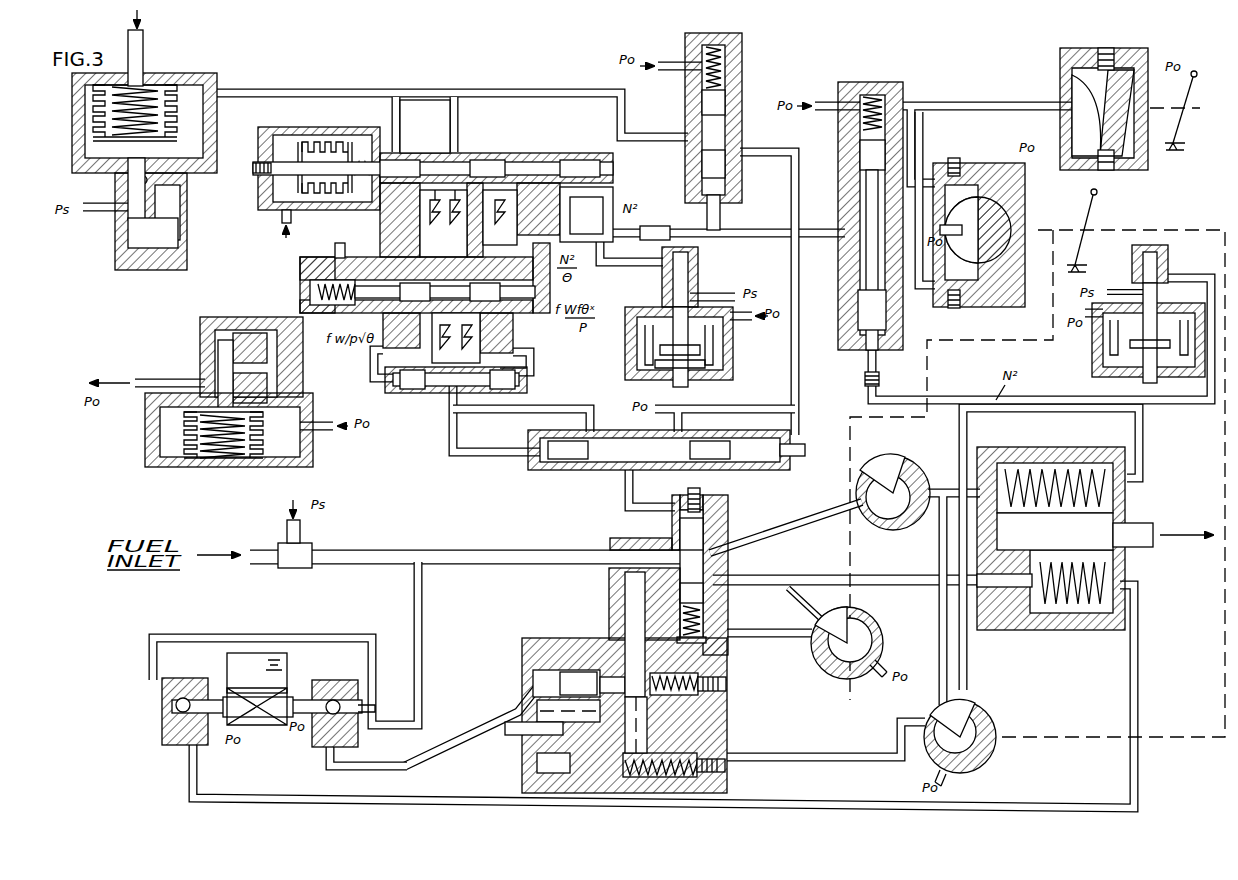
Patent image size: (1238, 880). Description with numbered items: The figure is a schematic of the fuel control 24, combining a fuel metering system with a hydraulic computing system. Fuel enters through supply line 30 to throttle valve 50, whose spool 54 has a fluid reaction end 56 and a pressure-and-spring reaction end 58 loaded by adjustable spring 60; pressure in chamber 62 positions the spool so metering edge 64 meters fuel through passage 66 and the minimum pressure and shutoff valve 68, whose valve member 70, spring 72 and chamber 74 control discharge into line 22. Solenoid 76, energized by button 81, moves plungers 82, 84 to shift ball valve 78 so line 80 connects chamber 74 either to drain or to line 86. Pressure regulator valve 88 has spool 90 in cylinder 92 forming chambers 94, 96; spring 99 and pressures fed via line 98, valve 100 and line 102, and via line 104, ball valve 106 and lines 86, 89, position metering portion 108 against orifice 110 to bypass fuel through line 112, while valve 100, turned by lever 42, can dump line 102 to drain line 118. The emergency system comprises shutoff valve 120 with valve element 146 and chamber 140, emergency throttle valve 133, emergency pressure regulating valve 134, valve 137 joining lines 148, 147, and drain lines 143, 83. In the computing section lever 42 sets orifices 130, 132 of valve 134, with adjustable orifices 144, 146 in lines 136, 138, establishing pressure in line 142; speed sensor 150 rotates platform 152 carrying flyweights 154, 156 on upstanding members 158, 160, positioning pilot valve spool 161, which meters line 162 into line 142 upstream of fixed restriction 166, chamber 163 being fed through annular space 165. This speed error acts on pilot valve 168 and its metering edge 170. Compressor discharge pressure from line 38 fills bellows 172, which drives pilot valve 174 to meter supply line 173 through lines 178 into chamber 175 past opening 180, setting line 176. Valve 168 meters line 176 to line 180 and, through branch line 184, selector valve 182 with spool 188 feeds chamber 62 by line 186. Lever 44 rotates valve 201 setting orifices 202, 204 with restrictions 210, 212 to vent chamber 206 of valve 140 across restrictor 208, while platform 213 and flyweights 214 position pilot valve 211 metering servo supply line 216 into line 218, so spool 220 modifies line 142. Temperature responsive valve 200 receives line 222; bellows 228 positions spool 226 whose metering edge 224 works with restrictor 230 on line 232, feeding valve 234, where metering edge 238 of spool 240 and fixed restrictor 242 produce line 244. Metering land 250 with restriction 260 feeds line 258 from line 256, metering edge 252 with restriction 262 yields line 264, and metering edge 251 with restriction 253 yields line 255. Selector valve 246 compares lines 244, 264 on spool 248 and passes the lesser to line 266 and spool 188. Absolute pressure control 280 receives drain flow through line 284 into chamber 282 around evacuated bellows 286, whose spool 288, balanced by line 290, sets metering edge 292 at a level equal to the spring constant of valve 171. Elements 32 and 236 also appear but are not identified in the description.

The line 22 is at (1163, 521).
The fuel control 24 is at (825, 86).
The supply line 30 is at (455, 548).
The bypass passage 32 is at (515, 745).
The line 38 is at (145, 58).
The lever 42 is at (1093, 210).
The lever 44 is at (1194, 110).
The throttle valve 50 is at (730, 523).
The spool 54 is at (730, 505).
The fluid reaction end 56 is at (660, 522).
The pressure and spring reaction end 58 is at (705, 598).
The adjustable spring 60 is at (705, 620).
The chamber 62 is at (702, 495).
The metering edge 64 is at (735, 555).
The passage 66 is at (798, 575).
The minimum pressure and shutoff valve 68 is at (1040, 650).
The valve member 70 is at (1015, 632).
The spring 72 is at (1128, 563).
The chamber 74 is at (1095, 632).
The solenoid 76 is at (292, 690).
The ball valve 78 is at (185, 698).
The line 80 is at (230, 795).
The button 81 is at (250, 650).
The plunger 82 is at (215, 695).
The line 83 is at (325, 715).
The plunger 84 is at (330, 700).
The line 86 is at (320, 636).
The pressure regulator valve 88 is at (700, 670).
The line 89 is at (375, 707).
The spool 90 is at (650, 727).
The cylinder 92 is at (793, 697).
The chamber 94 is at (700, 680).
The chamber 96 is at (580, 660).
The line 98 is at (810, 609).
The adjustable spring 99 is at (728, 690).
The valve 100 is at (865, 620).
The line 102 is at (769, 625).
The line 104 is at (460, 735).
The ball valve 106 is at (368, 751).
The metering portion 108 is at (623, 640).
The orifice 110 is at (650, 745).
The line 112 is at (609, 600).
The line 118 is at (880, 668).
The shutoff valve 120 is at (1065, 462).
The orifice 130 is at (1000, 180).
The orifice 132 is at (956, 248).
The emergency throttle valve 133 is at (915, 470).
The valve 134 is at (1005, 218).
The line 136 is at (945, 313).
The valve 137 is at (990, 716).
The line 138 is at (920, 170).
The valve 140 is at (910, 90).
The line 142 is at (760, 214).
The line 143 is at (1142, 472).
The adjustable orifice 144 is at (962, 300).
The adjustable orifice 146 is at (955, 165).
The line 147 is at (938, 550).
The line 148 is at (826, 739).
The speed sensor 150 is at (735, 333).
The platform 152 is at (715, 380).
The flyweight 154 is at (712, 345).
The flyweight 156 is at (640, 362).
The upstanding member 158 is at (600, 390).
The pilot valve 160 is at (716, 361).
The spool 161 is at (597, 333).
The line 162 is at (700, 275).
The chamber 163 is at (700, 258).
The annular space 165 is at (700, 268).
The fixed restriction 166 is at (664, 221).
The pilot valve 168 is at (727, 178).
The metering edge 170 is at (740, 155).
The valve 171 is at (185, 78).
The bellows 172 is at (180, 100).
The pressure supply line 173 is at (128, 212).
The pilot valve 174 is at (128, 240).
The chamber 175 is at (207, 120).
The line 176 is at (300, 90).
The line 178 is at (180, 206).
The opening 180 is at (800, 364).
The selector valve 182 is at (770, 460).
The branch line 184 is at (790, 403).
The line 186 is at (626, 496).
The spool 188 is at (592, 470).
The temperature responsive valve 200 is at (540, 150).
The valve 201 is at (1140, 130).
The orifice 202 is at (1105, 122).
The orifice 204 is at (1085, 75).
The chamber 206 is at (895, 338).
The restrictor 208 is at (890, 380).
The adjustable restriction 210 is at (1116, 168).
The pilot valve 211 is at (1152, 302).
The adjustable restriction 212 is at (1116, 52).
The platform 213 is at (1158, 378).
The flyweights 214 is at (1185, 320).
The servo supply line 216 is at (1115, 290).
The line 218 is at (1178, 407).
The spool 220 is at (862, 268).
The line 222 is at (425, 126).
The metering edge 224 is at (305, 224).
The spool 226 is at (335, 167).
The bellows 228 is at (315, 135).
The restrictor 230 is at (417, 276).
The line 232 is at (348, 258).
The valve 234 is at (300, 262).
The port 236 is at (326, 247).
The metering edge 238 is at (443, 262).
The spool 240 is at (593, 293).
The fixed restrictor 242 is at (456, 338).
The line 244 is at (373, 338).
The selector valve 246 is at (390, 385).
The spool 248 is at (440, 392).
The metering land 250 is at (472, 150).
The metering edge 251 is at (560, 156).
The metering land 252 is at (499, 230).
The fixed restriction 253 is at (586, 214).
The line 255 is at (558, 275).
The line 256 is at (458, 120).
The line 258 is at (505, 168).
The fixed restriction 260 is at (443, 223).
The fixed restriction 262 is at (533, 340).
The line 264 is at (577, 353).
The line 266 is at (505, 460).
The absolute pressure control 280 is at (315, 470).
The chamber 282 is at (418, 350).
The line 284 is at (340, 430).
The bellows 286 is at (258, 462).
The spool 288 is at (230, 340).
The line 290 is at (268, 328).
The metering edge 292 is at (220, 365).